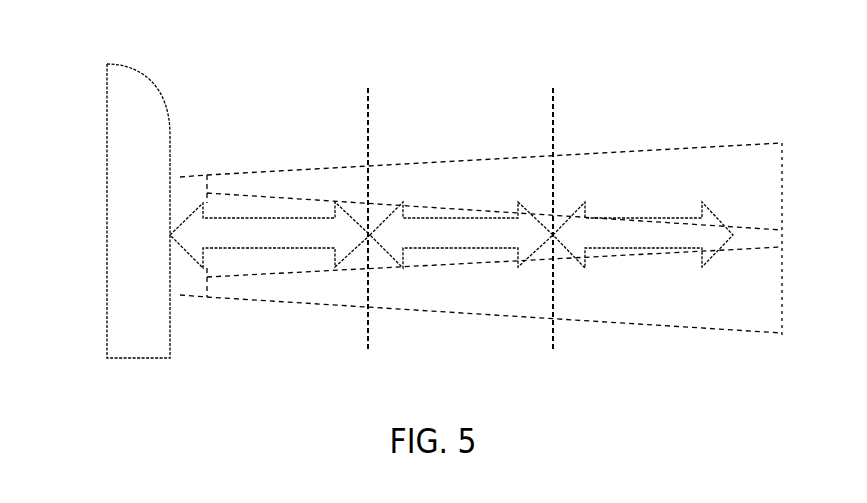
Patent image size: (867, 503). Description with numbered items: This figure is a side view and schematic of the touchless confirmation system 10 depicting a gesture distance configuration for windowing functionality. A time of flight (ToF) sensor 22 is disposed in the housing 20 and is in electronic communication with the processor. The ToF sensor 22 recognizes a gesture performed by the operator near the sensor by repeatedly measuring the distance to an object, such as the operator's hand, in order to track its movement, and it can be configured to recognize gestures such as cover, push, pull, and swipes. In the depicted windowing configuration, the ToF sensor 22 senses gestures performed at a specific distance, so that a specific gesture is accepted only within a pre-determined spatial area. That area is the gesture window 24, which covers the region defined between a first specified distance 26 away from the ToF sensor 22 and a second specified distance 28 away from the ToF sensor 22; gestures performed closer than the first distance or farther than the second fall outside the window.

The touchless confirmation system 10 is at (88, 44).
The housing 20 is at (113, 171).
The time of flight (ToF) sensor 22 is at (200, 168).
The gesture window 24 is at (463, 147).
The first specified distance 26 is at (362, 334).
The second specified distance 28 is at (556, 334).